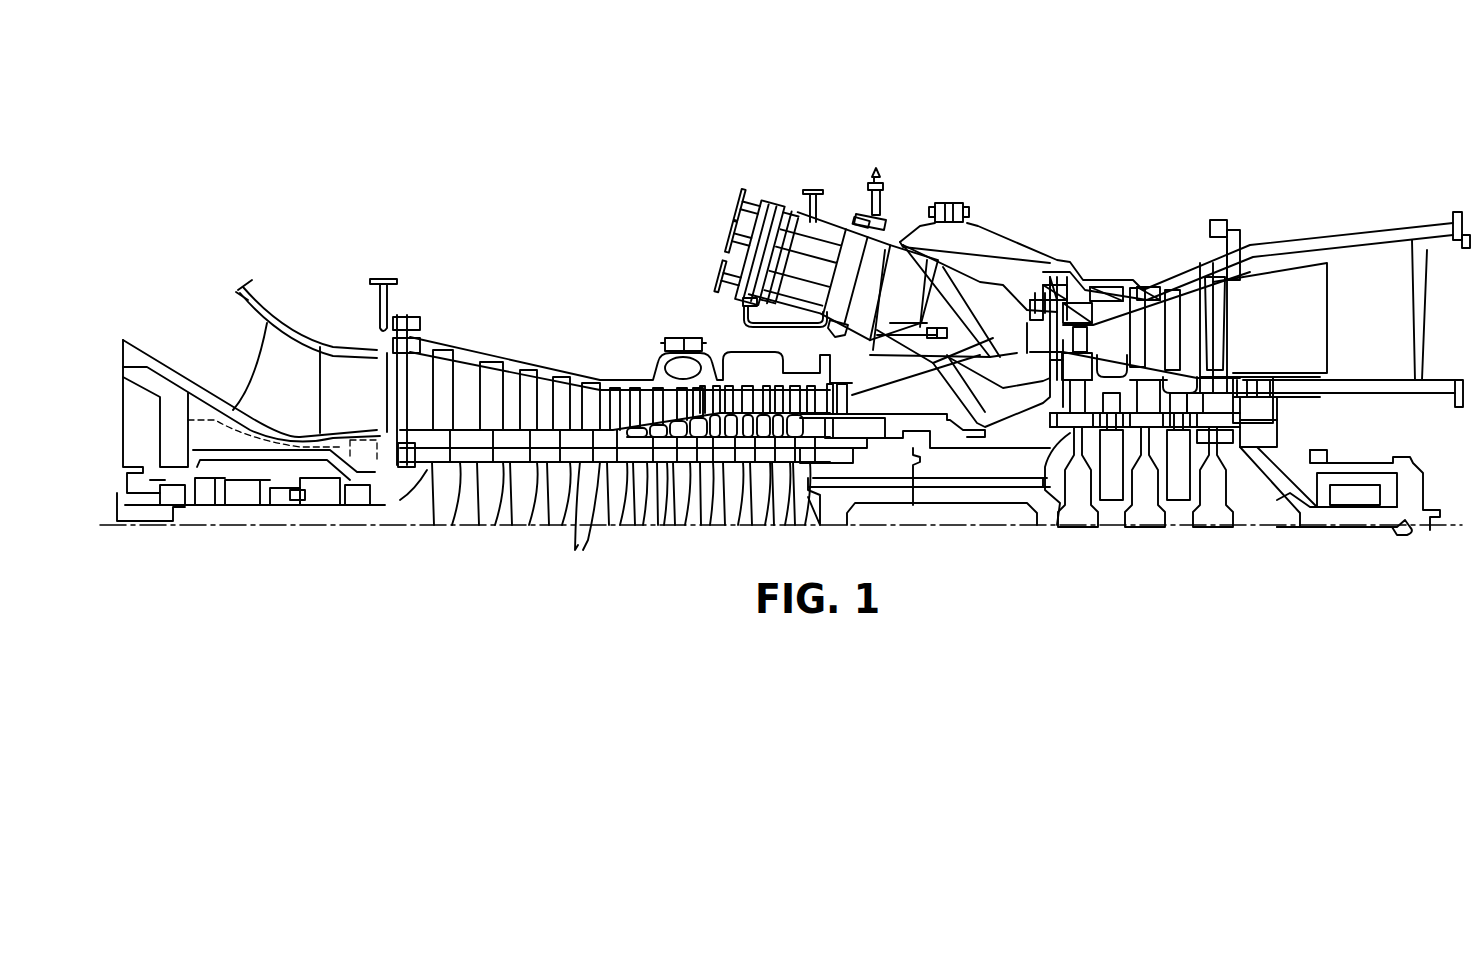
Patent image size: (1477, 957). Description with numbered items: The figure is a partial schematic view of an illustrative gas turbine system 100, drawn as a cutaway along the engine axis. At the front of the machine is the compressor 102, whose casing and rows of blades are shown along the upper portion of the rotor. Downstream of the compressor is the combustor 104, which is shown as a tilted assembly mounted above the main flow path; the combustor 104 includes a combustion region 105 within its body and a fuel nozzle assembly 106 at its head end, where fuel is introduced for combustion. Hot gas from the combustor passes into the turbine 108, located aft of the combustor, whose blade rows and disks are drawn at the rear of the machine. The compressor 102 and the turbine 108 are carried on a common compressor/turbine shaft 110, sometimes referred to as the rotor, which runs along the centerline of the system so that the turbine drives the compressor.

The gas turbine system 100 is at (298, 148).
The compressor 102 is at (507, 352).
The combustor 104 is at (882, 155).
The combustion region 105 is at (862, 258).
The fuel nozzle assembly 106 is at (785, 230).
The turbine 108 is at (1200, 260).
The common compressor/turbine shaft 110 is at (413, 495).